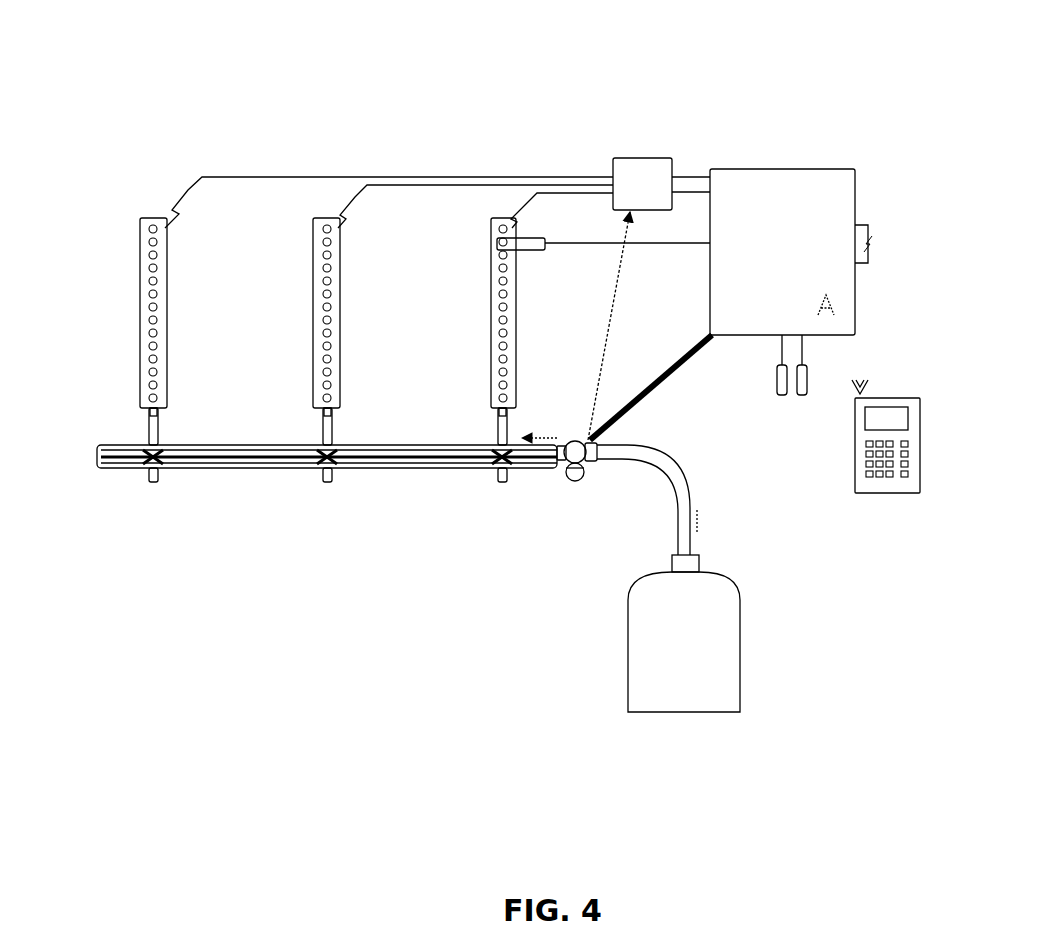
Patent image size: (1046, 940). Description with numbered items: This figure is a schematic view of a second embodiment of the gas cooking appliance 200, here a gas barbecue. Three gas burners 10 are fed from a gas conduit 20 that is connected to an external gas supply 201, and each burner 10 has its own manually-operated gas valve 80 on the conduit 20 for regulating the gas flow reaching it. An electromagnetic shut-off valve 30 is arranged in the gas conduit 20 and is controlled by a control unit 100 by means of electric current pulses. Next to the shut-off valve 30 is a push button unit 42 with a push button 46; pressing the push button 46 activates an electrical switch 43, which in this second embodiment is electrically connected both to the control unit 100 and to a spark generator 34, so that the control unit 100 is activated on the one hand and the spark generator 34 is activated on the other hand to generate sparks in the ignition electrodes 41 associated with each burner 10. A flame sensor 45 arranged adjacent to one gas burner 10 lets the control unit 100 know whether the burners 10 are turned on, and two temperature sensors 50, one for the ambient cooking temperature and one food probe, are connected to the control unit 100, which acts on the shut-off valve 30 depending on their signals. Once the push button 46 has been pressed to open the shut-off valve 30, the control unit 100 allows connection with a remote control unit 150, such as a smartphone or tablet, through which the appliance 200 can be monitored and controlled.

The gas cooking appliance 200 is at (250, 76).
The gas burner 10 is at (141, 278).
The ignition electrode 41 is at (187, 194).
The spark generator 34 is at (648, 157).
The control unit 100 is at (796, 176).
The flame sensor 45 is at (525, 250).
The temperature sensor 50 is at (801, 393).
The remote control unit 150 is at (901, 383).
The gas conduit 20 is at (292, 466).
The gas valve 80 is at (150, 438).
The shut-off valve 30 is at (562, 426).
The electrical switch 43 is at (586, 440).
The push button 46 is at (580, 478).
The push button unit 42 is at (564, 496).
The external gas supply 201 is at (740, 650).